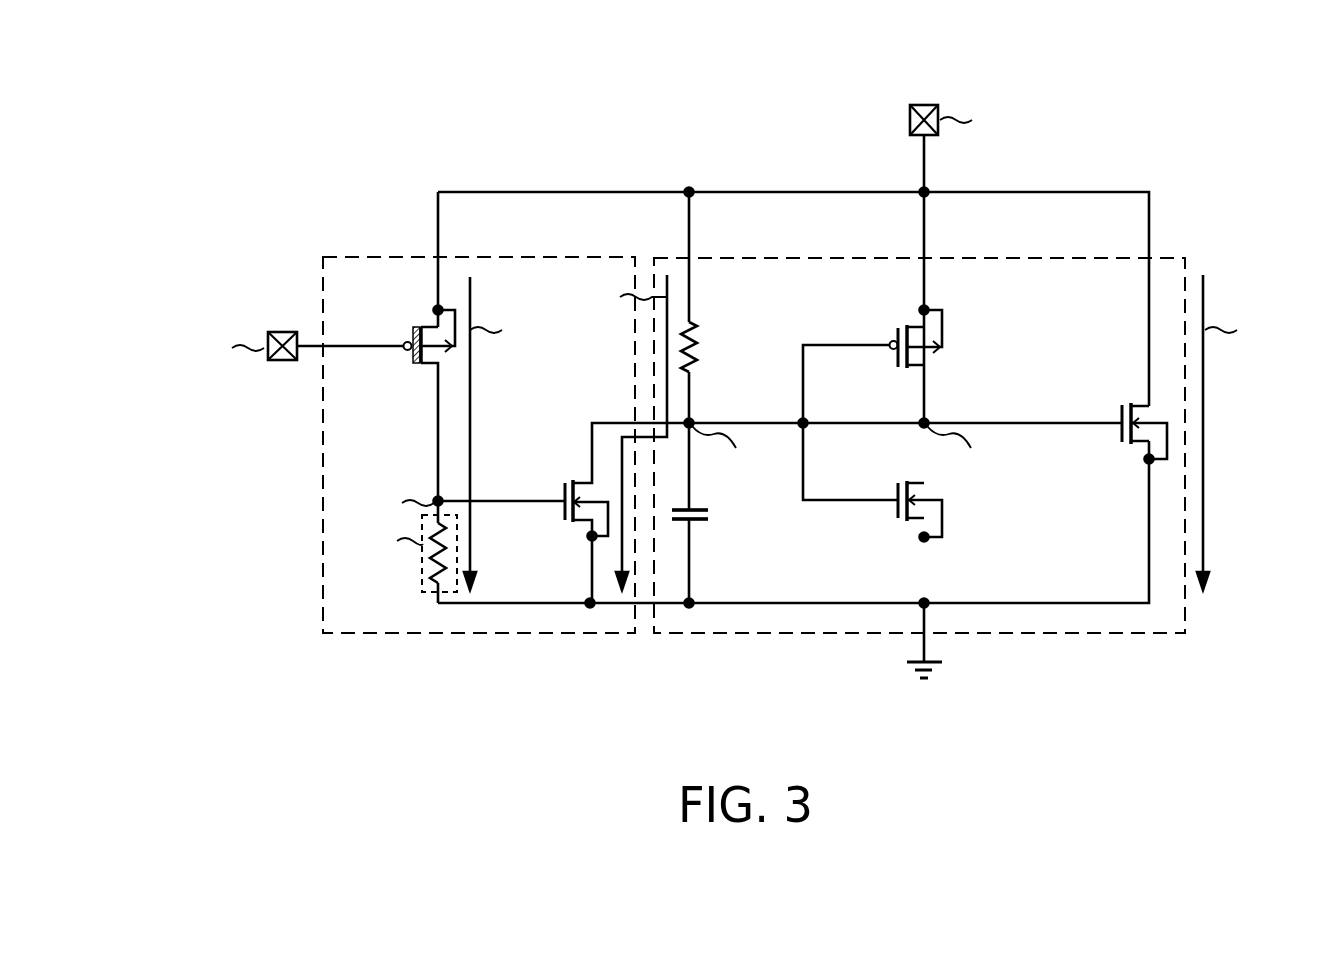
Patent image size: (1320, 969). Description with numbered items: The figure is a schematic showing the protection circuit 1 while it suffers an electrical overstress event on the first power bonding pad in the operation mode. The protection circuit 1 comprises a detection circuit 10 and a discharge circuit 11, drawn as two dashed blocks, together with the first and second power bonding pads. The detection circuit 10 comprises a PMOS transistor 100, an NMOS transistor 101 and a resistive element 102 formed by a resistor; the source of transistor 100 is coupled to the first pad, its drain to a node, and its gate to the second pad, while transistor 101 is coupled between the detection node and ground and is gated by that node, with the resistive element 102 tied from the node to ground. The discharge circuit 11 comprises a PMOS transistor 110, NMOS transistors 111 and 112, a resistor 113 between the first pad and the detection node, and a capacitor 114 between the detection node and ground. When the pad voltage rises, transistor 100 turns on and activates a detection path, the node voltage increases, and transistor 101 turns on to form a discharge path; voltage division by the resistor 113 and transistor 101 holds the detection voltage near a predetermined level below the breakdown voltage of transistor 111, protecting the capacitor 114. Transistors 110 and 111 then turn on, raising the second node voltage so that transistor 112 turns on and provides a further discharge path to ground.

The protection circuit 1 is at (293, 107).
The detection circuit 10 is at (323, 257).
The discharge circuit 11 is at (753, 256).
The transistor 100 is at (418, 326).
The transistor 101 is at (565, 480).
The resistive element 102 is at (419, 585).
The transistor 110 is at (907, 325).
The transistor 111 is at (905, 481).
The transistor 112 is at (1130, 403).
The resistor 113 is at (700, 341).
The capacitor 114 is at (700, 521).